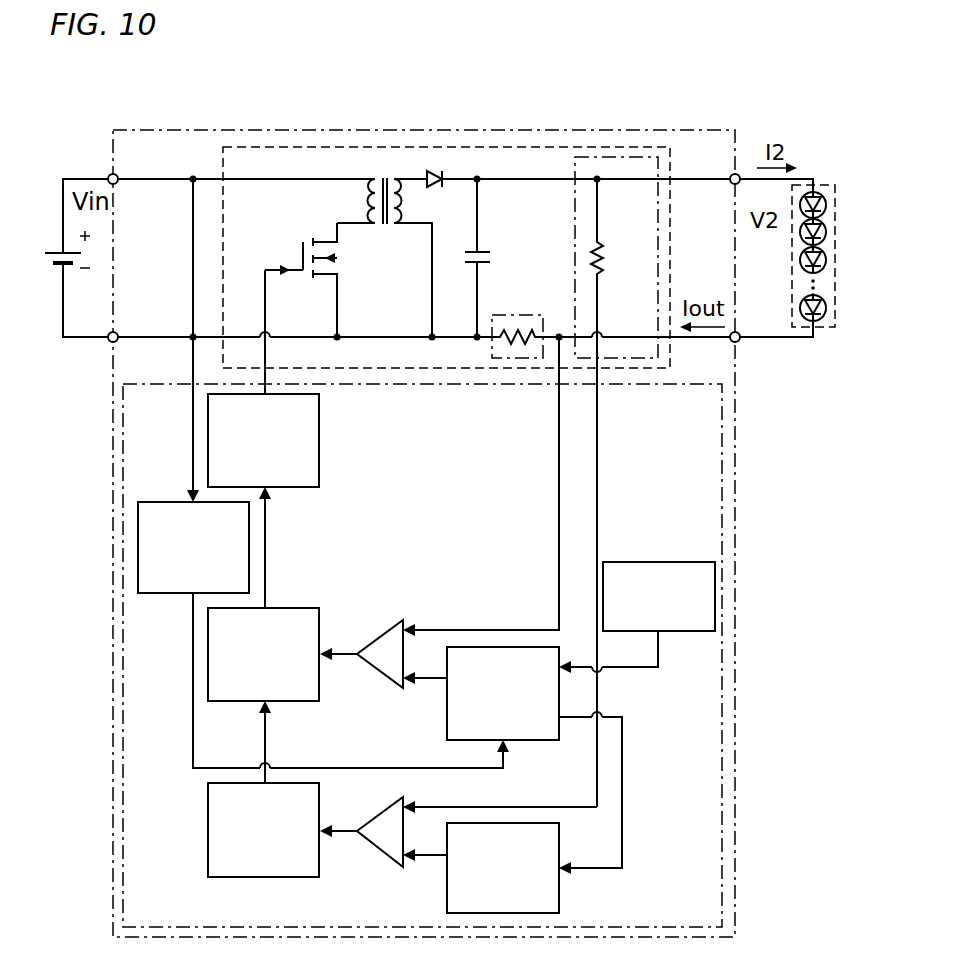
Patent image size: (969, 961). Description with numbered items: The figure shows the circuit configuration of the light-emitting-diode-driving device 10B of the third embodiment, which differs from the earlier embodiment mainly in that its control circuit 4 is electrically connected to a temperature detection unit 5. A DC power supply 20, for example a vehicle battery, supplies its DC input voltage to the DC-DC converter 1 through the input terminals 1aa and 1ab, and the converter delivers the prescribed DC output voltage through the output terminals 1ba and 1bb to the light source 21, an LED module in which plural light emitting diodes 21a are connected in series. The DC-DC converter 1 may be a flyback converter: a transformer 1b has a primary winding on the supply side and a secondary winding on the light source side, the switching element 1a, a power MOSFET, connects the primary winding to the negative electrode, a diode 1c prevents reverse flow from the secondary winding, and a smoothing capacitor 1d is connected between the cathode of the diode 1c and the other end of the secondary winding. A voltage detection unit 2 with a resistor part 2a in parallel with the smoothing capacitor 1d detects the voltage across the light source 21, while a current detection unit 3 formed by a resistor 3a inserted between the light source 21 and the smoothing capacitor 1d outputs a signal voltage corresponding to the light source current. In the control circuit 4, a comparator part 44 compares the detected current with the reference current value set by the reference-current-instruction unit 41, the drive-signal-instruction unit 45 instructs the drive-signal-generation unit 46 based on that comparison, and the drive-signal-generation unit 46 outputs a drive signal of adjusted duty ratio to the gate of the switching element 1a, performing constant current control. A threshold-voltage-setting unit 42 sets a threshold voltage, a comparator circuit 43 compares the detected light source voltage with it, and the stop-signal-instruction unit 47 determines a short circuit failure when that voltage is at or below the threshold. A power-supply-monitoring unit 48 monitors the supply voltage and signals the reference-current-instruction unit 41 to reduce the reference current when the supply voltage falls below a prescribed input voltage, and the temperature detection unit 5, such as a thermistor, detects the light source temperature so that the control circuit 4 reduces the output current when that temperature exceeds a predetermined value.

The light-emitting-diode-driving device 10B is at (717, 126).
The DC-DC converter 1 is at (222, 160).
The switching element 1a is at (300, 250).
The transformer 1b is at (369, 200).
The diode 1c is at (435, 190).
The smoothing capacitor 1d is at (483, 246).
The input terminal 1aa is at (109, 175).
The input terminal 1ab is at (118, 332).
The output terminal 1ba is at (731, 175).
The output terminal 1bb is at (739, 342).
The voltage detection unit 2 is at (574, 218).
The resistor part 2a is at (605, 256).
The current detection unit 3 is at (528, 314).
The resistor 3a is at (512, 326).
The control circuit 4 is at (724, 712).
The temperature detection unit 5 is at (663, 561).
The DC power supply 20 is at (55, 266).
The light source 21 is at (822, 328).
The light emitting diode 21a is at (802, 246).
The reference-current-instruction unit 41 is at (446, 722).
The threshold-voltage-setting unit 42 is at (560, 897).
The comparator circuit 43 is at (382, 844).
The comparator part 44 is at (384, 637).
The drive-signal-instruction unit 45 is at (298, 614).
The drive-signal-generation unit 46 is at (320, 463).
The stop-signal-instruction unit 47 is at (207, 853).
The power-supply-monitoring unit 48 is at (159, 501).